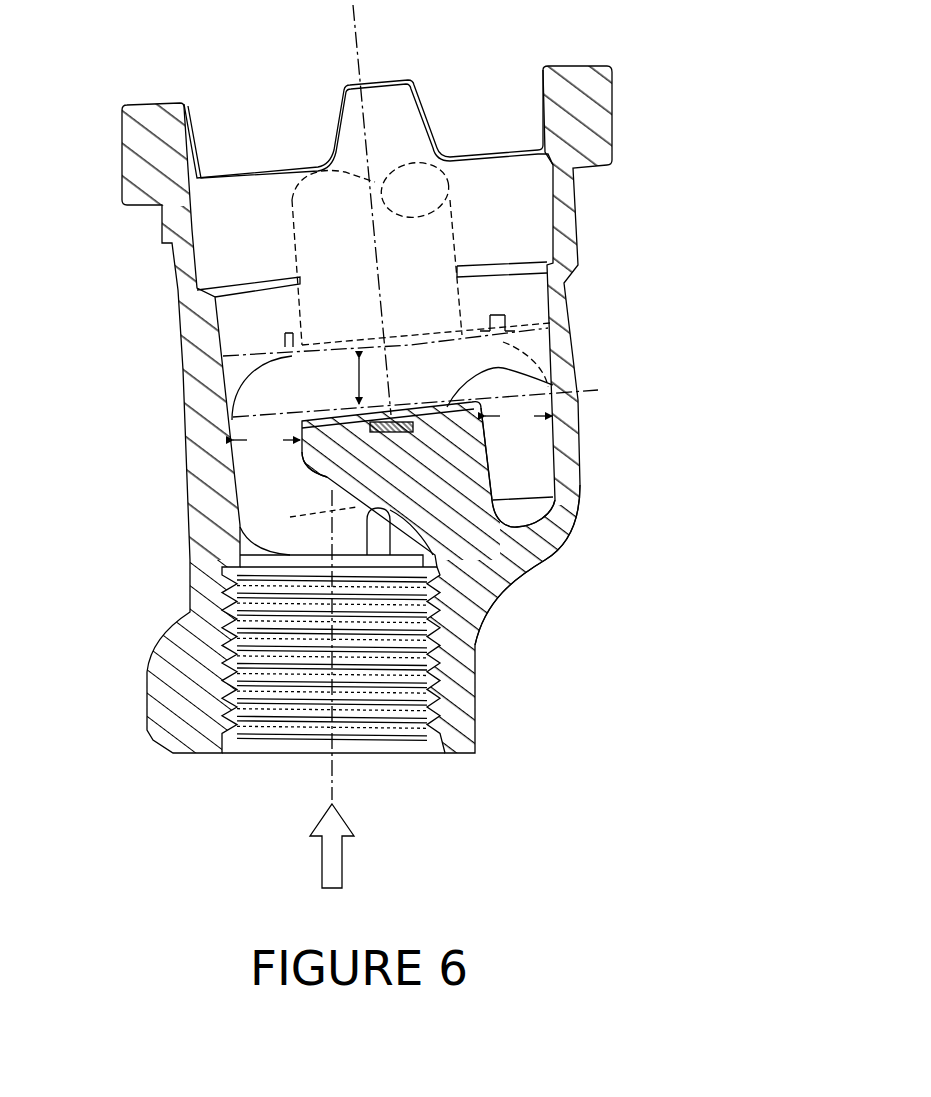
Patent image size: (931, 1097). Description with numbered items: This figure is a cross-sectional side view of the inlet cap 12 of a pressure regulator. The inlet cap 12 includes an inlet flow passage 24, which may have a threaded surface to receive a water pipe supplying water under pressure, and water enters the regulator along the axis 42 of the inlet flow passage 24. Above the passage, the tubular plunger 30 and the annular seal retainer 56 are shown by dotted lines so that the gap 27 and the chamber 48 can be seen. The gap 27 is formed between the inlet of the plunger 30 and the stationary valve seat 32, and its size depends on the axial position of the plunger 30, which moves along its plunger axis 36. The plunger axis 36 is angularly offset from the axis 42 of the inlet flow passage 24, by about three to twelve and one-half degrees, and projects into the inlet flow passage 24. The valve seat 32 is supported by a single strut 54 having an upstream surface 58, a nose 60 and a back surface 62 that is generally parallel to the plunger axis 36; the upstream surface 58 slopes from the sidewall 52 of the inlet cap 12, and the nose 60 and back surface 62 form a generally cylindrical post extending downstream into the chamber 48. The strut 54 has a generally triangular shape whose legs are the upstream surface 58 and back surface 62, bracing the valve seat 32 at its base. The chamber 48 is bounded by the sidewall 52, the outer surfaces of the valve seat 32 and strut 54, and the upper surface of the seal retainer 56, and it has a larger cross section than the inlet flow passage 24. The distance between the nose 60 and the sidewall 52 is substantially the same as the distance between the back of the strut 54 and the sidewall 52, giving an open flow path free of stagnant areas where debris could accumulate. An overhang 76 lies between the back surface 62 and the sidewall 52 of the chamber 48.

The inlet cap 12 is at (632, 303).
The inlet flow passage 24 is at (263, 776).
The gap 27 is at (357, 381).
The tubular plunger 30 is at (455, 226).
The valve seat 32 is at (554, 384).
The plunger axis 36 is at (354, 33).
The axis of the inlet flow passage 42 is at (334, 794).
The chamber 48 is at (537, 450).
The sidewall 52 is at (213, 542).
The strut 54 is at (418, 470).
The annular seal retainer 56 is at (238, 372).
The upstream surface 58 is at (347, 495).
The nose 60 is at (300, 463).
The back surface 62 is at (492, 487).
The overhang 76 is at (527, 542).